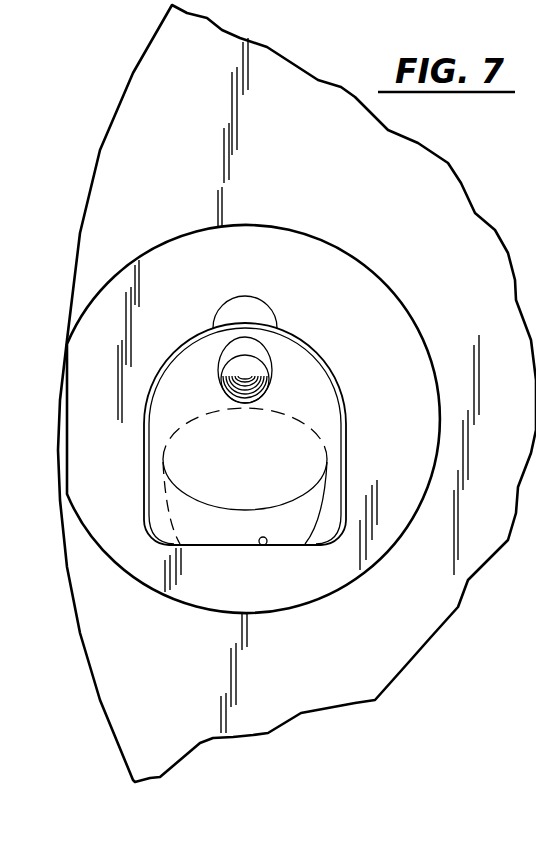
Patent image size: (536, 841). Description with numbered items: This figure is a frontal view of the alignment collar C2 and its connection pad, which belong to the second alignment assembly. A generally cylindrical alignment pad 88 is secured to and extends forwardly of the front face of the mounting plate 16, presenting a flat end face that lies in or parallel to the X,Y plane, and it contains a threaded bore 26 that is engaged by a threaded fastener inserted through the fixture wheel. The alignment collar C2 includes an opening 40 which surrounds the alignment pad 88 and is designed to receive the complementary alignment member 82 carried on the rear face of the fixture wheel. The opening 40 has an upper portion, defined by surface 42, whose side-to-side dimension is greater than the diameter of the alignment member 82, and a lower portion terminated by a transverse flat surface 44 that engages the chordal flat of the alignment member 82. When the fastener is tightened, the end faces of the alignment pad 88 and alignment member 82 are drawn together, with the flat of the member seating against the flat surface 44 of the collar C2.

The mounting plate 16 is at (126, 71).
The alignment collar C2 is at (328, 245).
The opening 40 is at (306, 384).
The threaded bore 26 is at (264, 376).
The alignment pad 88 is at (203, 397).
The surface 42 is at (154, 466).
The alignment member 82 is at (326, 480).
The transverse flat surface 44 is at (267, 547).